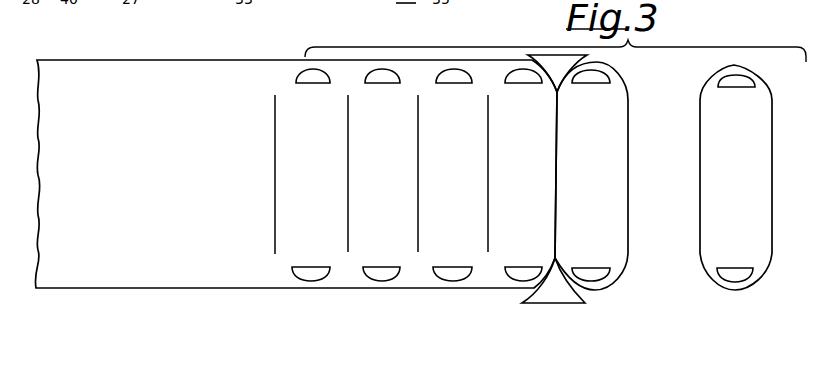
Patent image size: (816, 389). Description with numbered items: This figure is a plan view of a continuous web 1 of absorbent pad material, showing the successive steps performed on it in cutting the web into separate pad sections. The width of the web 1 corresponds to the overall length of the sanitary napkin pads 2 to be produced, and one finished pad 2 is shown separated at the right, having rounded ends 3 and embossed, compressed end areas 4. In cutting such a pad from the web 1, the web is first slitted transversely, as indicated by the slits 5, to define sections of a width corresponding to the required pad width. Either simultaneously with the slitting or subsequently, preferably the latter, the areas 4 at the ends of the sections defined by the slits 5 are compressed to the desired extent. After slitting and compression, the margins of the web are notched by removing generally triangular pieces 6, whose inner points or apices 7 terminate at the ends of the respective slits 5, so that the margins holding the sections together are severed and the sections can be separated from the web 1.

The continuous web 1 is at (52, 110).
The sanitary napkin pad 2 is at (760, 146).
The rounded end 3 is at (752, 72).
The compressed end area 4 is at (542, 175).
The transverse slit 5 is at (348, 166).
The triangular piece 6 is at (553, 62).
The apex 7 is at (553, 268).